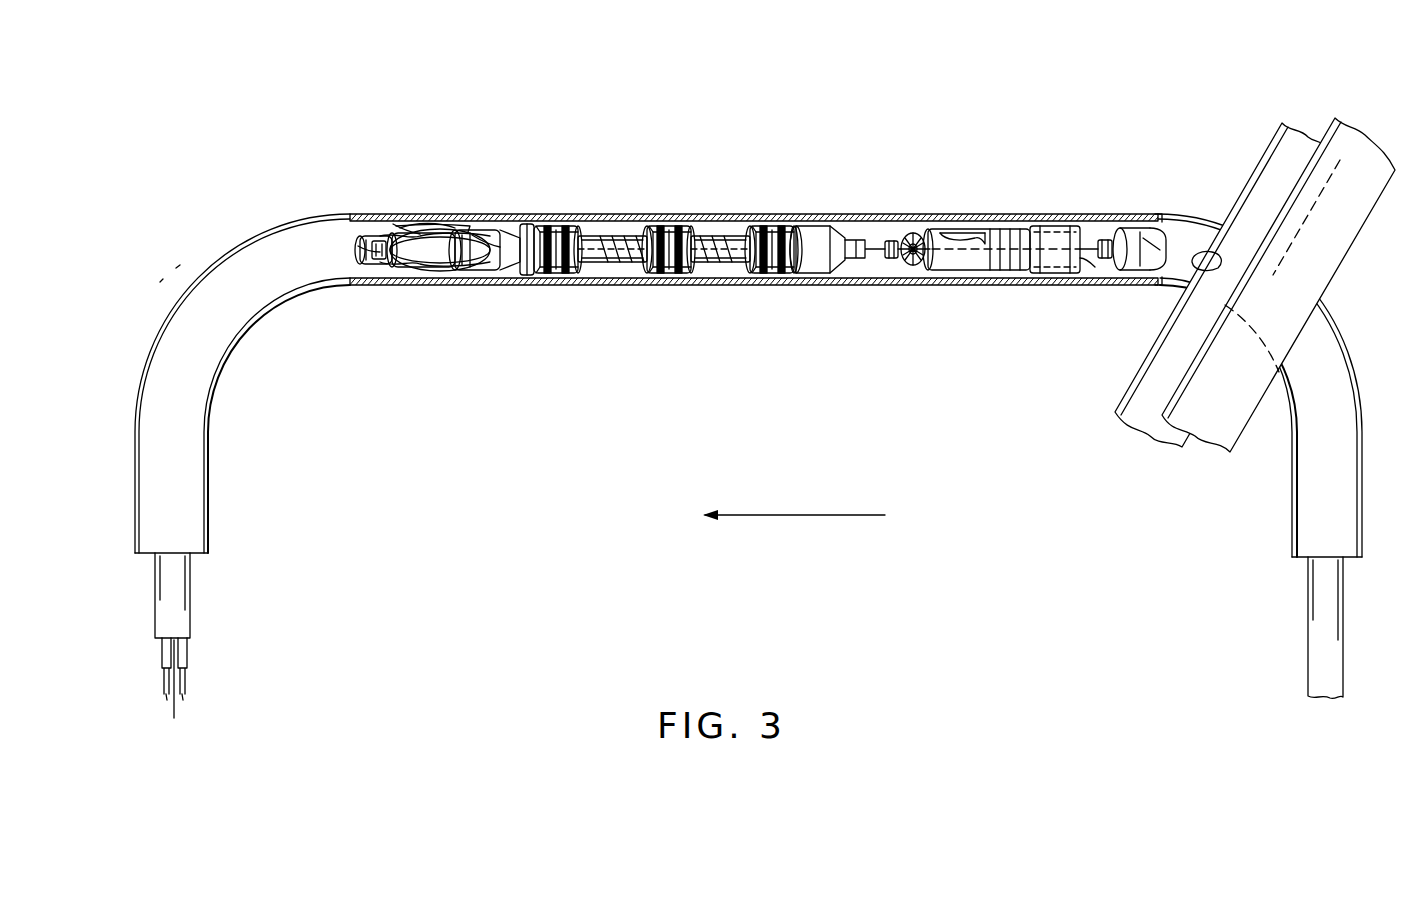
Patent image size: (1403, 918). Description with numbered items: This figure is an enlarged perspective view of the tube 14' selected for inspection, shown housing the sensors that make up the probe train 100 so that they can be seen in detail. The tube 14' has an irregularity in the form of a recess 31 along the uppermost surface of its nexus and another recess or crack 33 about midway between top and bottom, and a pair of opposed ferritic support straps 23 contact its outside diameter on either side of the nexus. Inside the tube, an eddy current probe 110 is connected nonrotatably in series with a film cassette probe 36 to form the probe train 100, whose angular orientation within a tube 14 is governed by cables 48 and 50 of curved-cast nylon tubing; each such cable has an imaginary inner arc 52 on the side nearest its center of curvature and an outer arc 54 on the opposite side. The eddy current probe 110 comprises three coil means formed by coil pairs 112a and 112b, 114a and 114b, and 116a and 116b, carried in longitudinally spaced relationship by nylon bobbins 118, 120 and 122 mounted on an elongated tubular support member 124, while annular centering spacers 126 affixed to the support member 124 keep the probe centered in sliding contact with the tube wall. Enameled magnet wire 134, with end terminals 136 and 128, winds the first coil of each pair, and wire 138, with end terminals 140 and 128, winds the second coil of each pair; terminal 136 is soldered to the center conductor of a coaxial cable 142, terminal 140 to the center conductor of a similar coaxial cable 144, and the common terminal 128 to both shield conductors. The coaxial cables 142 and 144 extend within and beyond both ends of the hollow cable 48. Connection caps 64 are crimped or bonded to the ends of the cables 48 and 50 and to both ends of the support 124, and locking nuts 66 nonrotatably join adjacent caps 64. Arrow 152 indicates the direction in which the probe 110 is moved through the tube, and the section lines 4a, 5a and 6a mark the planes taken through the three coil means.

The tube 14 is at (754, 257).
The tube 14' is at (242, 383).
The support straps 23 is at (1335, 262).
The recess 31 is at (1006, 226).
The recess or crack 33 is at (1197, 255).
The film cassette probe 36 is at (1048, 293).
The cable 48 is at (192, 592).
The cable 50 is at (1312, 586).
The inner arc 52 is at (1145, 275).
The outer arc 54 is at (1133, 225).
The connection caps 64 is at (358, 246).
The locking nuts 66 is at (393, 224).
The probe train 100 is at (879, 300).
The eddy current probe 110 is at (619, 295).
The coil 112a is at (570, 180).
The coil 112b is at (565, 210).
The coil 114a is at (683, 180).
The coil 114b is at (675, 210).
The coil 116a is at (796, 160).
The coil 116b is at (782, 210).
The bobbin 118 is at (562, 283).
The bobbin 120 is at (687, 272).
The bobbin 122 is at (788, 275).
The tubular support member 124 is at (743, 257).
The centering spacers 126 is at (528, 225).
The end terminal 128 is at (427, 280).
The enameled magnet wire 134 is at (445, 230).
The end terminal 136 is at (413, 223).
The wire 138 is at (452, 285).
The end terminal 140 is at (413, 268).
The coaxial cable 142 is at (160, 650).
The coaxial cable 144 is at (187, 650).
The arrow 152 is at (770, 517).
The section line 4a is at (525, 103).
The section line 5a is at (632, 103).
The section line 6a is at (739, 103).